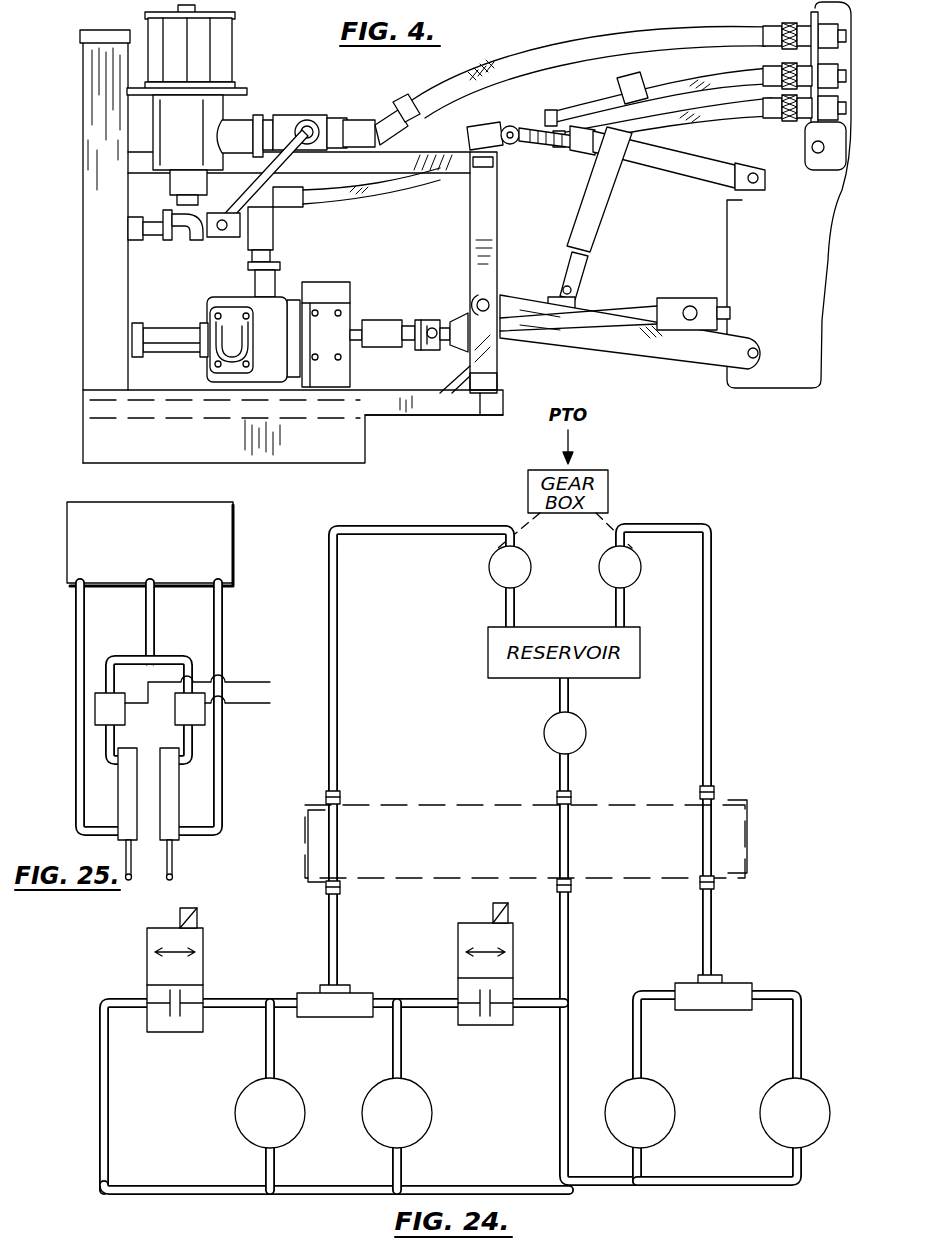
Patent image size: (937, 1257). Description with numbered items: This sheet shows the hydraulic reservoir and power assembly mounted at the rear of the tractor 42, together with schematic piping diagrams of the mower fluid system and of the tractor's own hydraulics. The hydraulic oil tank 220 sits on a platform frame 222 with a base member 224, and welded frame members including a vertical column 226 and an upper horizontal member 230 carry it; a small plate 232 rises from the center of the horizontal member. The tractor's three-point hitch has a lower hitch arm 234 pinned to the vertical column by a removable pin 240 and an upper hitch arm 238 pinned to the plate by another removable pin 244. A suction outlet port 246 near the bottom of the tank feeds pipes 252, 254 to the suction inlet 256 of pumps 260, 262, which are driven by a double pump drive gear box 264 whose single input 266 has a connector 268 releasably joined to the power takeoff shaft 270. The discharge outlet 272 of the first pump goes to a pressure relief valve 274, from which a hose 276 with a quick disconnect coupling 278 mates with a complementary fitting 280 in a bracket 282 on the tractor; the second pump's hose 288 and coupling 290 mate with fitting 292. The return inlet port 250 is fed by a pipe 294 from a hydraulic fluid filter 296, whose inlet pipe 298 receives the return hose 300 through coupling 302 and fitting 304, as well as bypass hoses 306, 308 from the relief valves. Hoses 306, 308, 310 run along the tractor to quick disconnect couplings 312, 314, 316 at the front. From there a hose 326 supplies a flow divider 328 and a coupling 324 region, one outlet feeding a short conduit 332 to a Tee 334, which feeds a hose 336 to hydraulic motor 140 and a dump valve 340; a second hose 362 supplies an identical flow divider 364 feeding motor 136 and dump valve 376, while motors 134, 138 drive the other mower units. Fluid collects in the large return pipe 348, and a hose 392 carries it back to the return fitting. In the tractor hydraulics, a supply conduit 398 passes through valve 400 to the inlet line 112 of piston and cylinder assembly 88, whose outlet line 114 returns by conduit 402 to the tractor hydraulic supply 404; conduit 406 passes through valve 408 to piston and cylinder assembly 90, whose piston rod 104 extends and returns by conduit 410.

In FIG. 4, the tractor 42 is at (746, 401).
In FIG. 24, the tractor 42 is at (439, 800).
In FIG. 25, the hydraulic piston and cylinder assembly 88 is at (122, 795).
In FIG. 25, the hydraulic piston and cylinder assembly 90 is at (172, 793).
In FIG. 25, the piston rod 104 is at (167, 880).
In FIG. 25, the hydraulic fluid inlet line 112 is at (105, 745).
In FIG. 25, the hydraulic fluid outlet line 114 is at (105, 835).
In FIG. 24, the hydraulic motor 134 is at (240, 1120).
In FIG. 24, the hydraulic motor 136 is at (675, 1125).
In FIG. 24, the hydraulic motor 138 is at (820, 1125).
In FIG. 24, the hydraulic motor 140 is at (432, 1125).
In FIG. 4, the hydraulic oil tank 220 is at (85, 350).
In FIG. 4, the platform frame 222 is at (310, 455).
In FIG. 4, the base member 224 is at (440, 410).
In FIG. 4, the vertical column 226 is at (497, 230).
In FIG. 4, the upper horizontal member 230 is at (465, 170).
In FIG. 4, the small plate 232 is at (490, 122).
In FIG. 4, the lower hitch arm 234 is at (675, 350).
In FIG. 4, the upper hitch arm 238 is at (660, 168).
In FIG. 4, the removable pin 240 is at (490, 300).
In FIG. 4, the removable pin 244 is at (510, 148).
In FIG. 4, the suction outlet port 246 is at (140, 352).
In FIG. 4, the fluid return inlet port 250 is at (128, 225).
In FIG. 4, the pipe 252 is at (162, 330).
In FIG. 24, the pipe 252 is at (520, 608).
In FIG. 24, the pipe 254 is at (630, 608).
In FIG. 4, the suction inlet 256 is at (222, 322).
In FIG. 4, the pump 260 is at (235, 297).
In FIG. 24, the pump 260 is at (490, 578).
In FIG. 24, the pump 262 is at (642, 567).
In FIG. 4, the double pump drive gear box 264 is at (340, 285).
In FIG. 4, the single independent input 266 is at (380, 318).
In FIG. 4, the connector 268 is at (432, 352).
In FIG. 4, the power takeoff shaft 270 is at (645, 300).
In FIG. 4, the discharge outlet 272 is at (290, 280).
In FIG. 4, the pressure relief valve 274 is at (268, 230).
In FIG. 4, the hose 276 is at (320, 195).
In FIG. 24, the hose 276 is at (340, 676).
In FIG. 4, the quick disconnect coupling 278 is at (772, 68).
In FIG. 24, the quick disconnect coupling 278 is at (320, 788).
In FIG. 4, the complementary fitting 280 is at (832, 68).
In FIG. 24, the complementary fitting 280 is at (326, 797).
In FIG. 4, the bracket 282 is at (825, 140).
In FIG. 4, the hose 288 is at (655, 118).
In FIG. 24, the hose 288 is at (715, 668).
In FIG. 4, the quick disconnect coupling 290 is at (800, 112).
In FIG. 24, the quick disconnect coupling 290 is at (720, 790).
In FIG. 4, the complementary fitting 292 is at (835, 160).
In FIG. 24, the complementary fitting 292 is at (718, 794).
In FIG. 4, the pipe 294 is at (147, 227).
In FIG. 4, the hydraulic fluid filter 296 is at (225, 95).
In FIG. 24, the hydraulic fluid filter 296 is at (587, 733).
In FIG. 4, the pipe 298 is at (358, 118).
In FIG. 4, the hose 300 is at (530, 45).
In FIG. 4, the quick disconnect coupling 302 is at (778, 25).
In FIG. 4, the complementary fitting 304 is at (815, 12).
In FIG. 4, the hose 306 is at (275, 125).
In FIG. 24, the hose 306 is at (318, 845).
In FIG. 4, the hose 308 is at (840, 112).
In FIG. 24, the hose 308 is at (575, 838).
In FIG. 4, the hose 310 is at (835, 45).
In FIG. 24, the hose 310 is at (745, 843).
In FIG. 24, the quick disconnect coupling 312 is at (326, 887).
In FIG. 24, the quick disconnect coupling 314 is at (578, 888).
In FIG. 24, the quick disconnect coupling 316 is at (715, 884).
In FIG. 24, the conduit 324 is at (345, 890).
In FIG. 24, the hose 326 is at (328, 940).
In FIG. 24, the flow divider 328 is at (355, 985).
In FIG. 24, the short conduit 332 is at (280, 1015).
In FIG. 24, the Tee 334 is at (262, 1000).
In FIG. 24, the hose 336 is at (100, 1108).
In FIG. 24, the dump valve 340 is at (147, 970).
In FIG. 24, the large return pipe 348 is at (300, 1195).
In FIG. 24, the hose 362 is at (712, 940).
In FIG. 24, the flow divider 364 is at (712, 1010).
In FIG. 24, the dump valve 376 is at (513, 960).
In FIG. 24, the hose 392 is at (570, 960).
In FIG. 25, the hydraulic supply conduit 398 is at (120, 657).
In FIG. 25, the electrically controlled valve 400 is at (95, 709).
In FIG. 25, the return conduit 402 is at (75, 685).
In FIG. 25, the tractor hydraulic supply 404 is at (234, 565).
In FIG. 25, the conduit 406 is at (172, 657).
In FIG. 25, the electrically operated valve 408 is at (205, 715).
In FIG. 25, the return conduit 410 is at (224, 660).